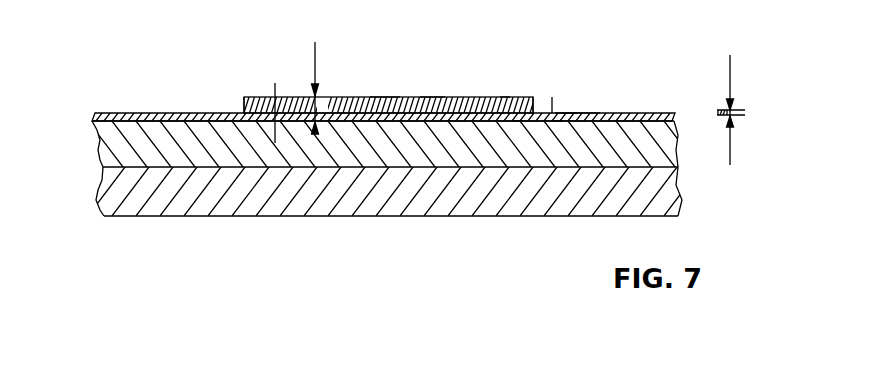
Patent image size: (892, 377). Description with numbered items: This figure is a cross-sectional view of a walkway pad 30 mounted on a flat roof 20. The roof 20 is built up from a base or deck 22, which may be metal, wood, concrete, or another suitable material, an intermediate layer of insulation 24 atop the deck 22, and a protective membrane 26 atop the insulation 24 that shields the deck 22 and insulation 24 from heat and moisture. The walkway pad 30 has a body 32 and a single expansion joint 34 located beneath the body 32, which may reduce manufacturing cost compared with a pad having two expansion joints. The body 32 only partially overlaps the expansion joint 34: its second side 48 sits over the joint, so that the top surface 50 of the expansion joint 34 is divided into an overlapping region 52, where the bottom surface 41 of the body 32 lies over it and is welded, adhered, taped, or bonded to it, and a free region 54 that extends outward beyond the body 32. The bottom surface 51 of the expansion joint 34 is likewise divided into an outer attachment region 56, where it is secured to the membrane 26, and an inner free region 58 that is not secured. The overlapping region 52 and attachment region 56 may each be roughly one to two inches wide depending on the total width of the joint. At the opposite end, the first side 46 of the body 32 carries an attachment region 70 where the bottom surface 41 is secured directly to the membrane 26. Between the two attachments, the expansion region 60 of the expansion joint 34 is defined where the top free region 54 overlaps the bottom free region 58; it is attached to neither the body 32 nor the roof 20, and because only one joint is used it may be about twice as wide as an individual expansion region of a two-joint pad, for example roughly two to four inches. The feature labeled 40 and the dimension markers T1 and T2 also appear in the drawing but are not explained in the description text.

The roof 20 is at (685, 190).
The deck 22 is at (112, 196).
The insulation 24 is at (104, 158).
The membrane 26 is at (97, 113).
The walkway pad 30 is at (647, 40).
The body 32 is at (384, 96).
The expansion joint 34 is at (570, 112).
The adhesive layer 40 is at (357, 96).
The bottom surface 41 is at (432, 96).
The first side 46 is at (244, 98).
The second side 48 is at (532, 96).
The top surface 50 is at (565, 108).
The bottom surface 51 is at (572, 118).
The overlapping region 52 is at (505, 95).
The free region 54 is at (568, 95).
The attachment region 56 is at (558, 128).
The inner free region 58 is at (517, 125).
The expansion region 60 is at (548, 97).
The attachment region 70 is at (250, 122).
The thickness T1 is at (335, 96).
The thickness T2 is at (717, 112).